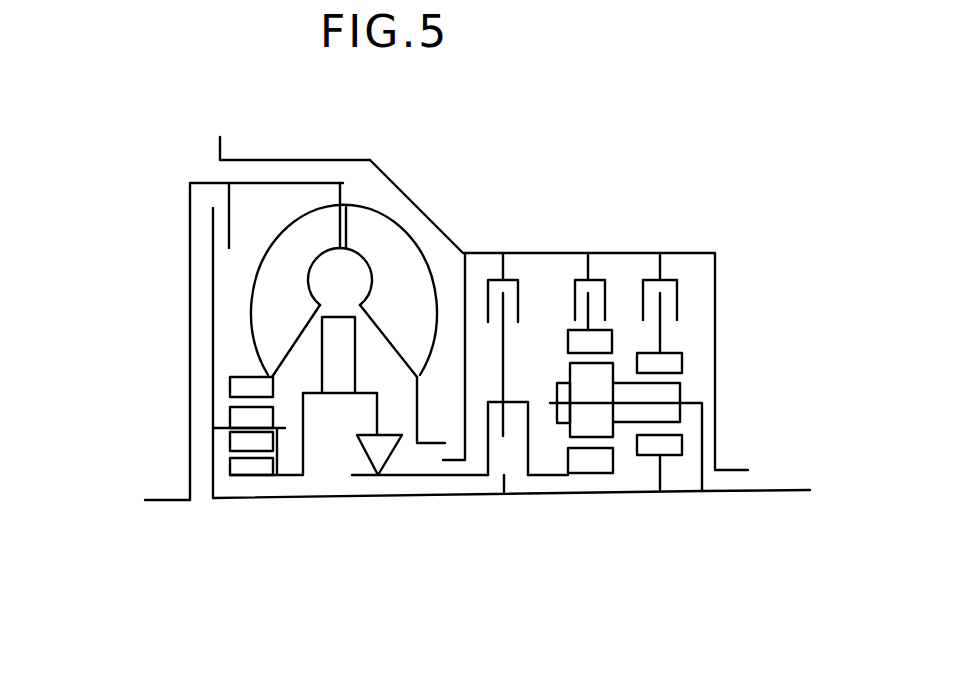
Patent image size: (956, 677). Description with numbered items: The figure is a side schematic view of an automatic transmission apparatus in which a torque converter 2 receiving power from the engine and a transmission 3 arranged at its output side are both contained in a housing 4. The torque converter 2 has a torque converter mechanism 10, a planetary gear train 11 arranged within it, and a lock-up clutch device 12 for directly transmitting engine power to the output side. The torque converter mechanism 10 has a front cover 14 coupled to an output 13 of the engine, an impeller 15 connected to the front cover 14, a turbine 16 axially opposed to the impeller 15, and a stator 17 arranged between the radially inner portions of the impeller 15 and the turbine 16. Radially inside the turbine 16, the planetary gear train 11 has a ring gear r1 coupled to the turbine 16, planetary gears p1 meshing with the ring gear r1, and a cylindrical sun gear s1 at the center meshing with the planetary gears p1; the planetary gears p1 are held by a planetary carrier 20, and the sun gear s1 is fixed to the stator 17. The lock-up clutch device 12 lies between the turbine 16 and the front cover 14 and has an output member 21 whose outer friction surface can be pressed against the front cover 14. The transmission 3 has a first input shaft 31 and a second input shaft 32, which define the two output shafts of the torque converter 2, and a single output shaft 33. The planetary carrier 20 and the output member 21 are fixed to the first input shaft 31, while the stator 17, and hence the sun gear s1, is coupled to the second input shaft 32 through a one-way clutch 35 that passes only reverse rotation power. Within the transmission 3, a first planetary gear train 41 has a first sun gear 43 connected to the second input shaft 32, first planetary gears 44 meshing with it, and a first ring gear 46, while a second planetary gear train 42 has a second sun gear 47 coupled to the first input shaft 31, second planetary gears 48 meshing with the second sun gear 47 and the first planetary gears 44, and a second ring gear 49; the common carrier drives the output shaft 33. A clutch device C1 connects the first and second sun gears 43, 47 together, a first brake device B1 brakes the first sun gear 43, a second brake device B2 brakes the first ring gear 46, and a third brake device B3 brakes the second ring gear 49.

The torque converter 2 is at (427, 170).
The transmission 3 is at (634, 363).
The housing 4 is at (380, 158).
The torque converter mechanism 10 is at (396, 311).
The planetary gear train 11 is at (250, 490).
The lock-up clutch device 12 is at (198, 216).
The output of the engine 13 is at (167, 500).
The front cover 14 is at (190, 192).
The impeller 15 is at (348, 324).
The turbine 16 is at (339, 321).
The stator 17 is at (342, 338).
The planetary carrier 20 is at (212, 431).
The output member 21 is at (213, 379).
The first input shaft 31 is at (397, 498).
The second input shaft 32 is at (433, 477).
The output shaft 33 is at (747, 490).
The one-way clutch 35 is at (371, 450).
The first planetary gear train 41 is at (586, 478).
The second planetary gear train 42 is at (643, 467).
The first sun gear 43 is at (597, 467).
The first planetary gears 44 is at (572, 423).
The first ring gear 46 is at (578, 340).
The second sun gear 47 is at (670, 452).
The second planetary gears 48 is at (667, 393).
The second ring gear 49 is at (673, 357).
The ring gear r1 is at (257, 383).
The sun gear s1 is at (232, 474).
The planetary gears p1 is at (252, 440).
The first brake device B1 is at (507, 278).
The second brake device B2 is at (598, 278).
The third brake device B3 is at (677, 278).
The clutch device C1 is at (507, 448).